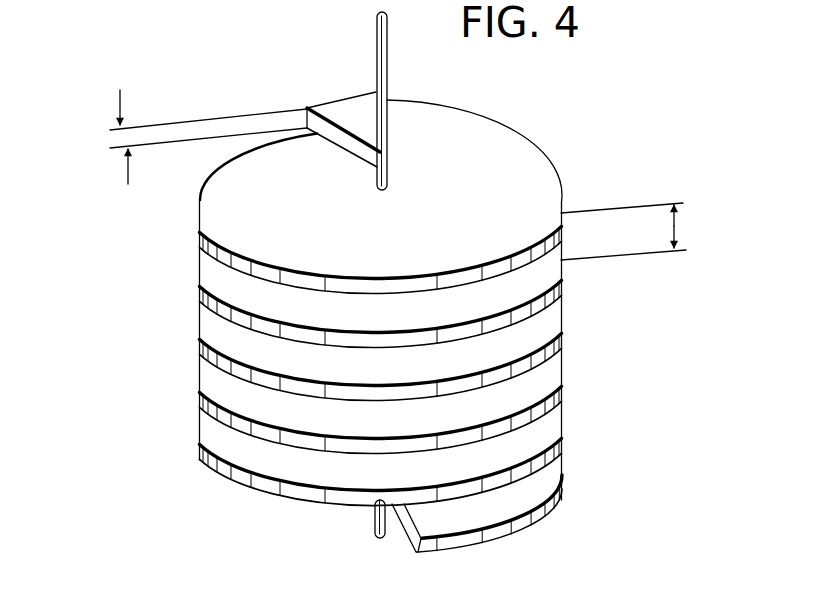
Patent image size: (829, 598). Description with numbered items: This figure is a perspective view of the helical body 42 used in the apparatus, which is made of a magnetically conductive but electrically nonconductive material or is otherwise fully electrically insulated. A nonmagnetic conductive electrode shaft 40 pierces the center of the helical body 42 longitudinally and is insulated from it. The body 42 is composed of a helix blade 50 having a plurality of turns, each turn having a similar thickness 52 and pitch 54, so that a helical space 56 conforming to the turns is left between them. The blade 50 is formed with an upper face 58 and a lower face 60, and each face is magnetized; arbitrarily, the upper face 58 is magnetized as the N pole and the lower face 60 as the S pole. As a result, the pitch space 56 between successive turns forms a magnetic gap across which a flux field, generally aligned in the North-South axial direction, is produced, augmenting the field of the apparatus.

The electrode shaft 40 is at (374, 43).
The helical body 42 is at (197, 323).
The helix blade 50 is at (528, 158).
The thickness 52 is at (126, 133).
The pitch 54 is at (678, 229).
The helical space 56 is at (535, 316).
The upper face 58 is at (540, 471).
The lower face 60 is at (503, 527).